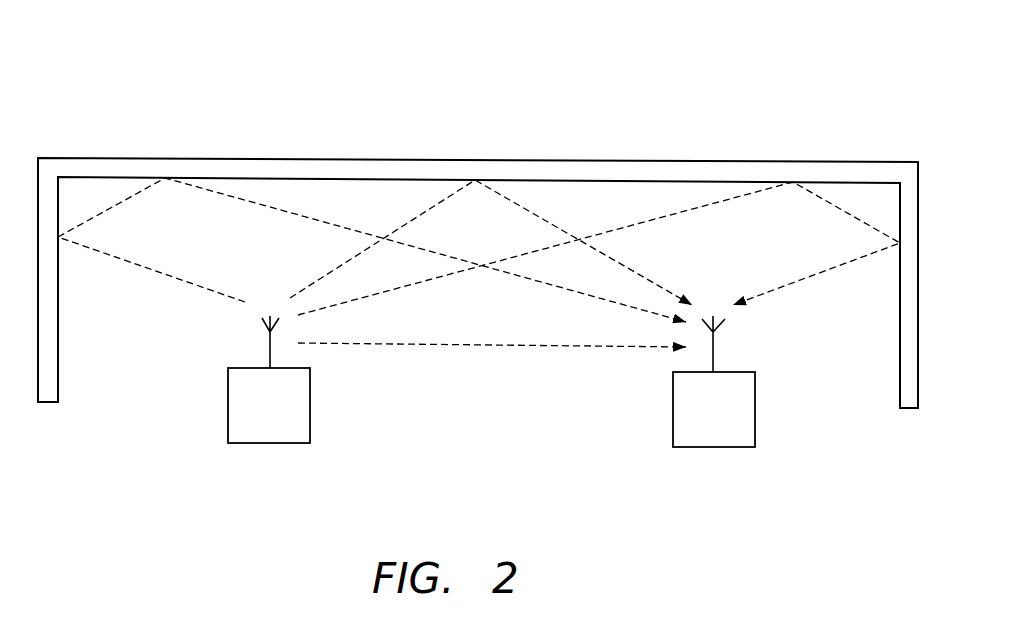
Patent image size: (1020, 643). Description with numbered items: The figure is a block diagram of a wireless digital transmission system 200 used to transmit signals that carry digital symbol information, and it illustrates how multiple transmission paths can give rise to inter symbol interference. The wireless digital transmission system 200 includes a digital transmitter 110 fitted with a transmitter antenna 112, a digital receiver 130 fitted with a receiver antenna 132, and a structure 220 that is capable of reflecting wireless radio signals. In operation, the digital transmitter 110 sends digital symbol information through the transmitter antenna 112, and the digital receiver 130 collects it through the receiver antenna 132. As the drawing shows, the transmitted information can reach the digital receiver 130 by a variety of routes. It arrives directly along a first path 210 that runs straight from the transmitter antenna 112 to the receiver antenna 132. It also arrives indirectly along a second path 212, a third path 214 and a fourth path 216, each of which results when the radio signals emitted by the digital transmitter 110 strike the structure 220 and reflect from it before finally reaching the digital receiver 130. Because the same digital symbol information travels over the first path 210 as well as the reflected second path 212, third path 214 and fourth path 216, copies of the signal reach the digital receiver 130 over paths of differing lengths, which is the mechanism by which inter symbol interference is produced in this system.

The wireless digital transmission system 200 is at (478, 259).
The structure 220 is at (382, 160).
The digital transmitter 110 is at (268, 445).
The transmitter antenna 112 is at (262, 325).
The digital receiver 130 is at (715, 447).
The receiver antenna 132 is at (718, 327).
The first path 210 is at (478, 345).
The second path 212 is at (688, 210).
The third path 214 is at (497, 195).
The fourth path 216 is at (223, 192).